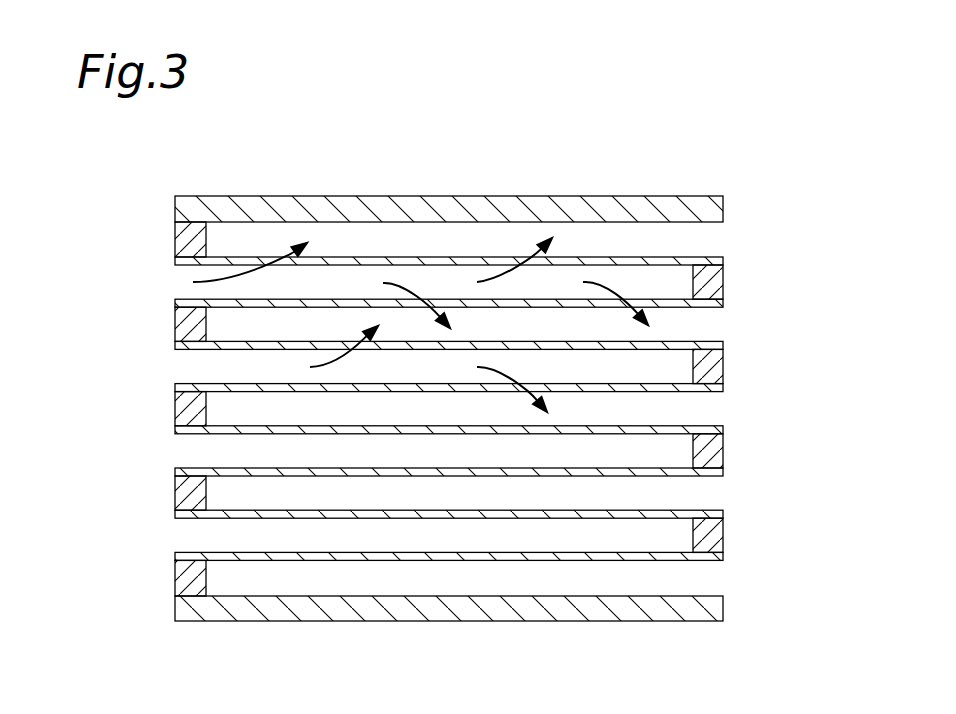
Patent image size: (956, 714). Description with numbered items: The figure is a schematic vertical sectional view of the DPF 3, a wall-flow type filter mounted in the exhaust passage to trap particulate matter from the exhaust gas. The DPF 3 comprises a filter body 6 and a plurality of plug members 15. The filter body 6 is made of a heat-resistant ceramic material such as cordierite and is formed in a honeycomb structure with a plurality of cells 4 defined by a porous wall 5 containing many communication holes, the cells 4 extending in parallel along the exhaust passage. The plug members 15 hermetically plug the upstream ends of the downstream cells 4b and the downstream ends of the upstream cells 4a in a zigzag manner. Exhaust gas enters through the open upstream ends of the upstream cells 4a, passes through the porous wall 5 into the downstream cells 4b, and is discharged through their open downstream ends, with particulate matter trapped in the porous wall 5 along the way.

The DPF 3 is at (722, 147).
The cells 4 is at (702, 578).
The upstream cells 4a is at (347, 283).
The downstream cells 4b is at (458, 238).
The porous wall 5 is at (608, 257).
The filter body 6 is at (210, 182).
The plug members 15 is at (717, 357).